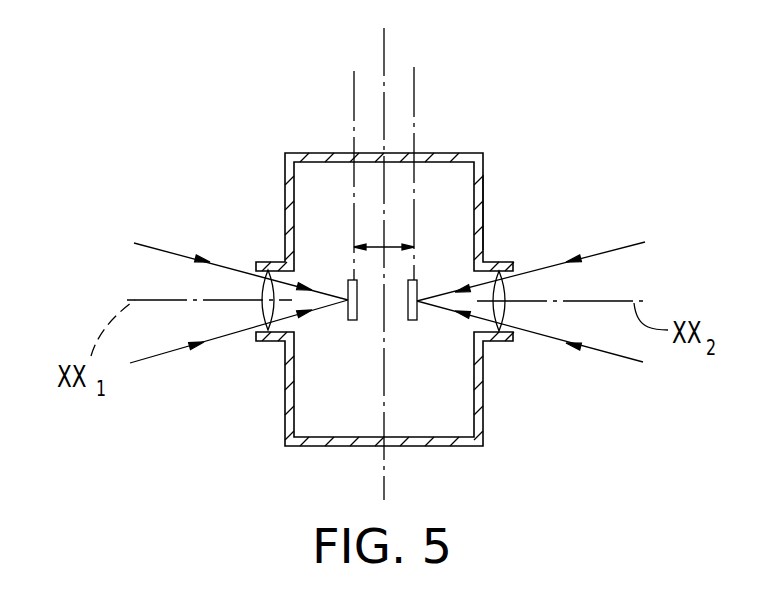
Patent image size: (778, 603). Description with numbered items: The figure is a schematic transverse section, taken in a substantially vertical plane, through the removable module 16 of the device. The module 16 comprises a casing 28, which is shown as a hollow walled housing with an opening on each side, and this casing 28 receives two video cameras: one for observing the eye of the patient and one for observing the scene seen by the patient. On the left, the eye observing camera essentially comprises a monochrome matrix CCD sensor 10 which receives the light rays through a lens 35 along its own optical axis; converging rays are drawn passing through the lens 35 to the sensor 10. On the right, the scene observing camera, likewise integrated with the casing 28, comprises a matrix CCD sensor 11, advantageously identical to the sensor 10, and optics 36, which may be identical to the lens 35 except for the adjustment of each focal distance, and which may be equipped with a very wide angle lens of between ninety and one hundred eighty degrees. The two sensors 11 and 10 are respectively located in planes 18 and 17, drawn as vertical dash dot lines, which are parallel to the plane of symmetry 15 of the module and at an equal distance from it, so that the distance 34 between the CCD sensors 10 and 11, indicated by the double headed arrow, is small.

The monochrome matrix CCD sensor 10 is at (352, 322).
The matrix CCD sensor 11 is at (413, 322).
The plane of symmetry 15 is at (384, 50).
The removable module 16 is at (270, 201).
The plane of CCD sensor 10 17 is at (354, 106).
The plane of CCD sensor 11 18 is at (414, 97).
The casing 28 is at (482, 176).
The distance between CCD sensors 34 is at (384, 247).
The lens 35 is at (265, 290).
The optics 36 is at (501, 291).